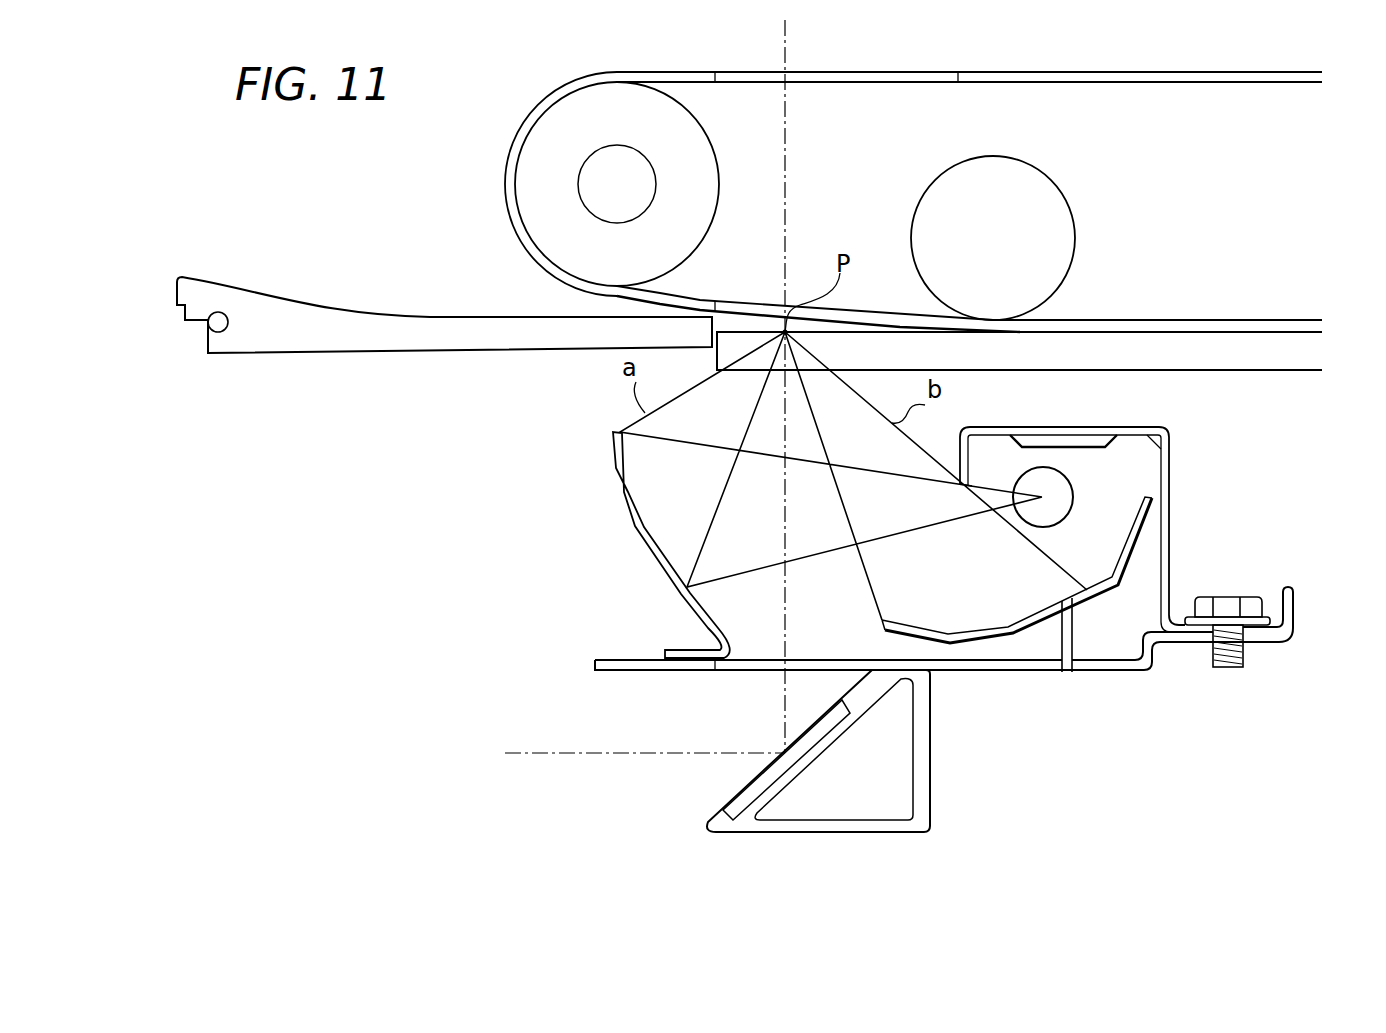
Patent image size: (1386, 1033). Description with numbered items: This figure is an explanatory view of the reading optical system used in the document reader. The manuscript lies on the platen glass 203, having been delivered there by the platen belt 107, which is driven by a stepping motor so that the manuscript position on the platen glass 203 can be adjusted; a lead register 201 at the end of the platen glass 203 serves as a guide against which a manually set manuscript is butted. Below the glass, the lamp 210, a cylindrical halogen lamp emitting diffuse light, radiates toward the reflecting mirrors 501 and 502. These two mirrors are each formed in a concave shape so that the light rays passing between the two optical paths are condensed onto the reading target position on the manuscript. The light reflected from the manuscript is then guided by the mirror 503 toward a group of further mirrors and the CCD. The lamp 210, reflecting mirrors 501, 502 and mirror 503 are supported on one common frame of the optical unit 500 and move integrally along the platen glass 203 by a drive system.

The platen belt 107 is at (1127, 327).
The lead register 201 is at (433, 338).
The platen glass 203 is at (1210, 358).
The lamp 210 is at (1033, 513).
The sensor unit 500 is at (1088, 745).
The reflecting mirror 501 is at (631, 510).
The reflecting mirror 502 is at (1152, 528).
The mirror 503 is at (743, 815).